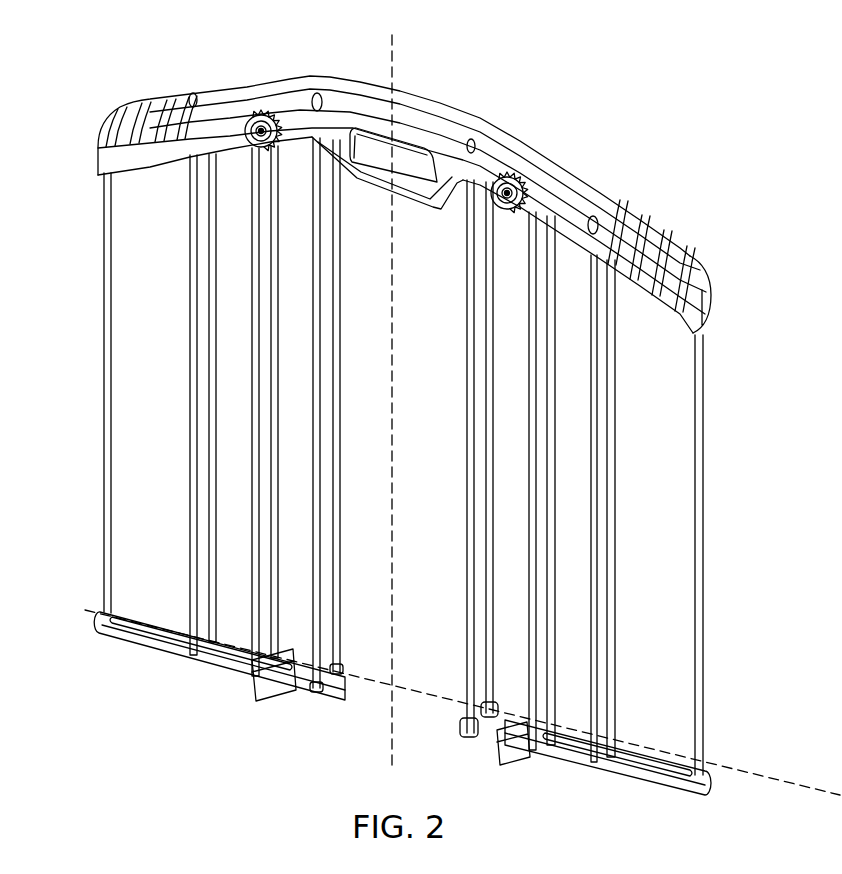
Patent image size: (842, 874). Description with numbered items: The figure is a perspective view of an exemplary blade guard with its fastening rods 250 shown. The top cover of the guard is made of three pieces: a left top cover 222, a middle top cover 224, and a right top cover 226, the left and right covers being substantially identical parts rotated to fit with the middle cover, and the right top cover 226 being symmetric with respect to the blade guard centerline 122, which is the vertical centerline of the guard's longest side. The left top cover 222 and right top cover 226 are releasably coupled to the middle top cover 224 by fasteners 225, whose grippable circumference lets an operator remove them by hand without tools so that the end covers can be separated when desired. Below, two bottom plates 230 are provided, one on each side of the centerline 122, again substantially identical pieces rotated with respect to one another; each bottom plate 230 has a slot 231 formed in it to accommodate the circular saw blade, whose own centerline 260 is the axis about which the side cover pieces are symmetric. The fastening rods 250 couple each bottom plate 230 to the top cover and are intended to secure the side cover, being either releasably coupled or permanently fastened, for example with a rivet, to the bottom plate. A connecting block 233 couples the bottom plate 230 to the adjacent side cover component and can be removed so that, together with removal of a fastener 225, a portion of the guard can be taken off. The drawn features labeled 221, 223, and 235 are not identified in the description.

The blade guard centerline 122 is at (395, 63).
The aperture in top rail 221 is at (190, 102).
The left top cover 222 is at (143, 108).
The handle opening 223 is at (422, 155).
The middle top cover 224 is at (478, 140).
The fasteners 225 is at (262, 108).
The right top cover 226 is at (654, 230).
The bottom plate 230 is at (112, 637).
The slot 231 is at (150, 640).
The connecting block 233 is at (265, 690).
The clip 235 is at (326, 690).
The fastening rods 250 is at (104, 393).
The centerline of the circular saw blade 260 is at (718, 781).